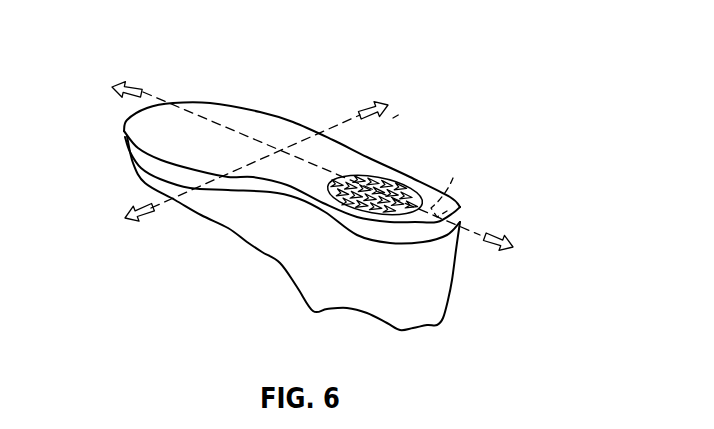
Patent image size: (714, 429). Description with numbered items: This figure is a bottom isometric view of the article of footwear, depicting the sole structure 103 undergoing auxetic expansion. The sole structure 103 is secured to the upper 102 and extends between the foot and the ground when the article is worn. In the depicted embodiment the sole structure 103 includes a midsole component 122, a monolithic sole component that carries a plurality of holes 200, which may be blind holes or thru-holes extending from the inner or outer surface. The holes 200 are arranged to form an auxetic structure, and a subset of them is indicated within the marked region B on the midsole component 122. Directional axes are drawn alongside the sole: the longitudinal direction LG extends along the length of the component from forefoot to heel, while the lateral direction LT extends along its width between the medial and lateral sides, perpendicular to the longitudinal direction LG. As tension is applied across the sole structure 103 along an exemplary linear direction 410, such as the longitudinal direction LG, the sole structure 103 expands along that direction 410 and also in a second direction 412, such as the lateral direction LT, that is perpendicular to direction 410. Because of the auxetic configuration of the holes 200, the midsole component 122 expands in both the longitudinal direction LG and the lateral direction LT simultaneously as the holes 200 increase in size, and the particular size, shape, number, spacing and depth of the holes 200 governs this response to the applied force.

The upper 102 is at (268, 225).
The sole structure 103 is at (205, 93).
The midsole component 122 is at (235, 125).
The holes 200 is at (341, 197).
The linear direction 410 is at (447, 187).
The second direction 412 is at (403, 119).
The detail view B is at (380, 170).
The longitudinal direction LG is at (138, 84).
The lateral direction LT is at (133, 208).